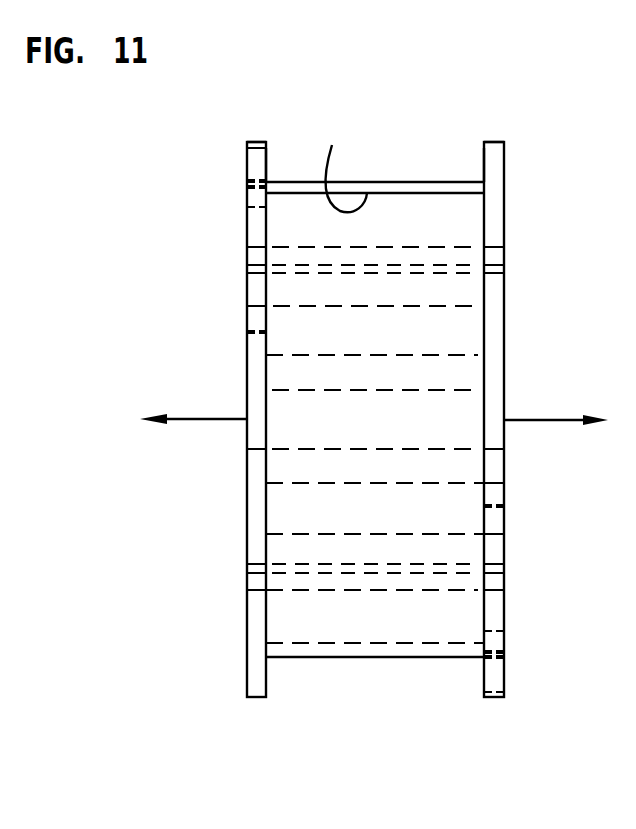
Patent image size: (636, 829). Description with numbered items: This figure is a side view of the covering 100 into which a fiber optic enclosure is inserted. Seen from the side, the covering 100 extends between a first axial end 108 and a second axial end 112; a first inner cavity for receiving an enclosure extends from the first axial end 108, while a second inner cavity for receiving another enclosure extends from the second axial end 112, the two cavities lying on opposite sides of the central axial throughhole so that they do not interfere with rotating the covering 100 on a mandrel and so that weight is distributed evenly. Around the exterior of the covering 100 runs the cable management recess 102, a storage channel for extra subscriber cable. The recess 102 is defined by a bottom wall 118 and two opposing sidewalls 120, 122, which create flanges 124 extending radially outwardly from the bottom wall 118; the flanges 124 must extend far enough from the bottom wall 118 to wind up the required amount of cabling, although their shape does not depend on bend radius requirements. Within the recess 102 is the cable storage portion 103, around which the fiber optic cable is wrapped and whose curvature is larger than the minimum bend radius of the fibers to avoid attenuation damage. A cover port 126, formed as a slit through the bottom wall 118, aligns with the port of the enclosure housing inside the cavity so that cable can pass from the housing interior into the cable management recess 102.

The covering 100 is at (374, 432).
The cable management recess 102 is at (434, 689).
The cable storage portion 103 is at (343, 658).
The first axial end 108 is at (505, 318).
The second axial end 112 is at (246, 326).
The bottom wall 118 is at (375, 181).
The sidewall 120 is at (268, 158).
The sidewall 122 is at (482, 158).
The flanges 124 is at (246, 163).
The cover port 126 is at (338, 166).